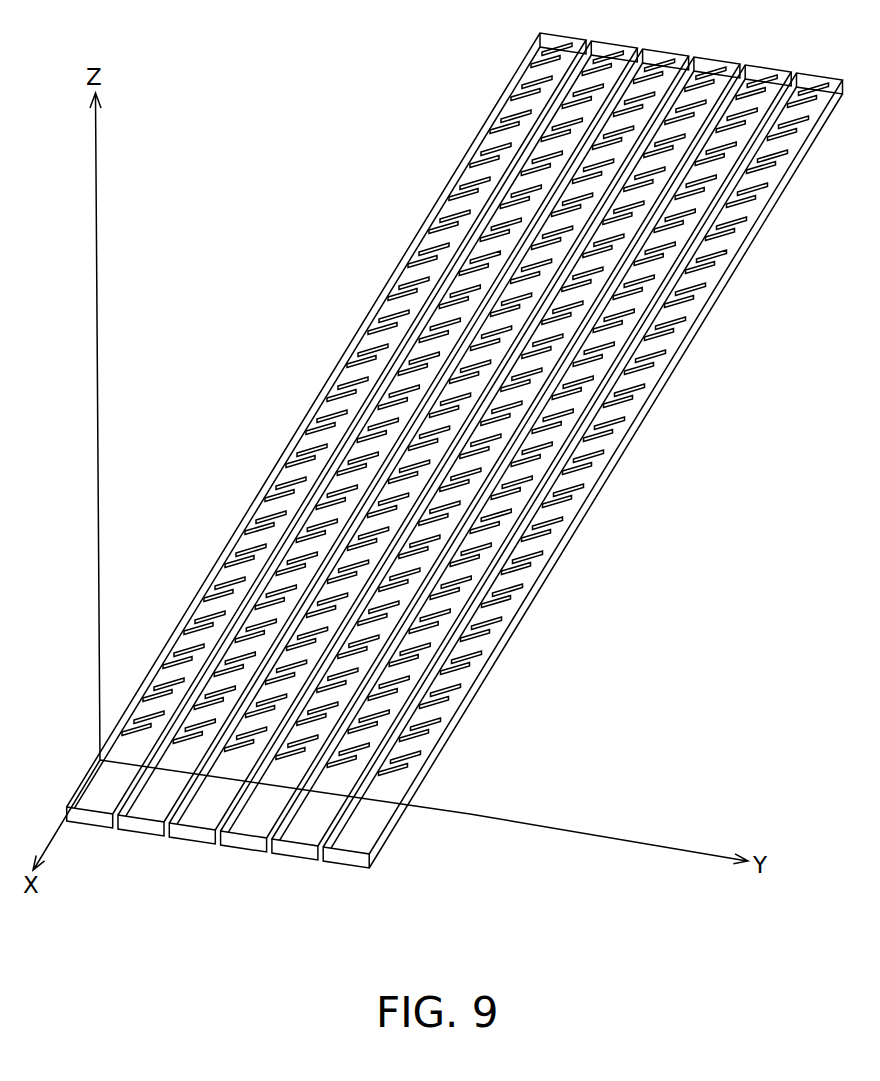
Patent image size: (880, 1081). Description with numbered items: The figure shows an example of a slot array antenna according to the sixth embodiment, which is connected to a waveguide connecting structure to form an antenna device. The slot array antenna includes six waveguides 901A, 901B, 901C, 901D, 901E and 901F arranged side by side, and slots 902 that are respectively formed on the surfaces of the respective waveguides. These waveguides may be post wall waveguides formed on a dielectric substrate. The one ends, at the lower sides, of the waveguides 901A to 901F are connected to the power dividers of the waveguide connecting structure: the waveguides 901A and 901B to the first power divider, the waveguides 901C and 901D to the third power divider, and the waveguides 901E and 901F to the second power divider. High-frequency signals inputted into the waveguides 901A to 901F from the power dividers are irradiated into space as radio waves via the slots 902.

The waveguide 901A is at (87, 816).
The waveguide 901B is at (126, 824).
The waveguide 901C is at (190, 835).
The waveguide 901D is at (250, 818).
The waveguide 901E is at (293, 848).
The waveguide 901F is at (372, 803).
The slot 902 is at (474, 640).